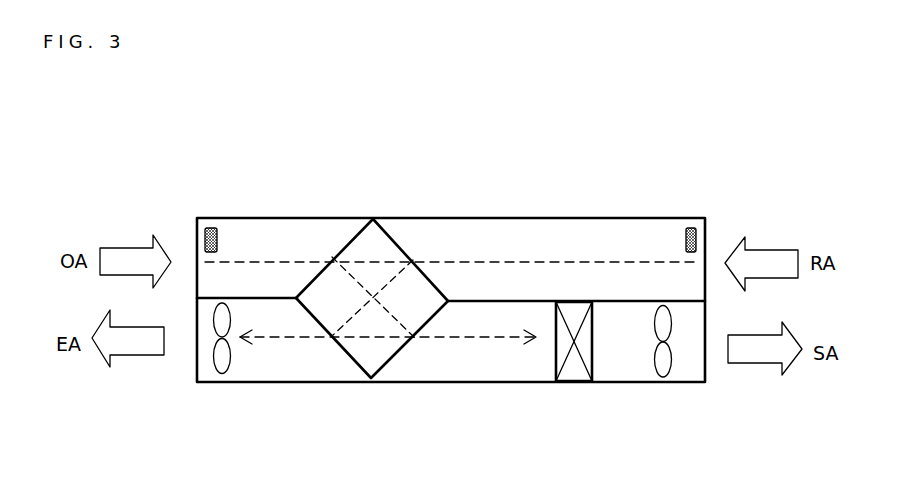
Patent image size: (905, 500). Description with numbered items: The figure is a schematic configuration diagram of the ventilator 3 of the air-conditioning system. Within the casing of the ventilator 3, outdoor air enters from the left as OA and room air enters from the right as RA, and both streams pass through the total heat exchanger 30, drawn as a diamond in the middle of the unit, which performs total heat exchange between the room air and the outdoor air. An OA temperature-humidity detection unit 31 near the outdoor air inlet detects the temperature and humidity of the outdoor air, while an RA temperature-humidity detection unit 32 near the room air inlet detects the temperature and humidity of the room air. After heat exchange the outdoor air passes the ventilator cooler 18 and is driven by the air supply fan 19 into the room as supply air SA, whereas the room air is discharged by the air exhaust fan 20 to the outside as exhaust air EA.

The ventilator 3 is at (602, 218).
The ventilator cooler 18 is at (568, 373).
The air supply fan 19 is at (665, 362).
The air exhaust fan 20 is at (222, 360).
The total heat exchanger 30 is at (367, 252).
The OA temperature-humidity detection unit 31 is at (208, 232).
The RA temperature-humidity detection unit 32 is at (693, 233).